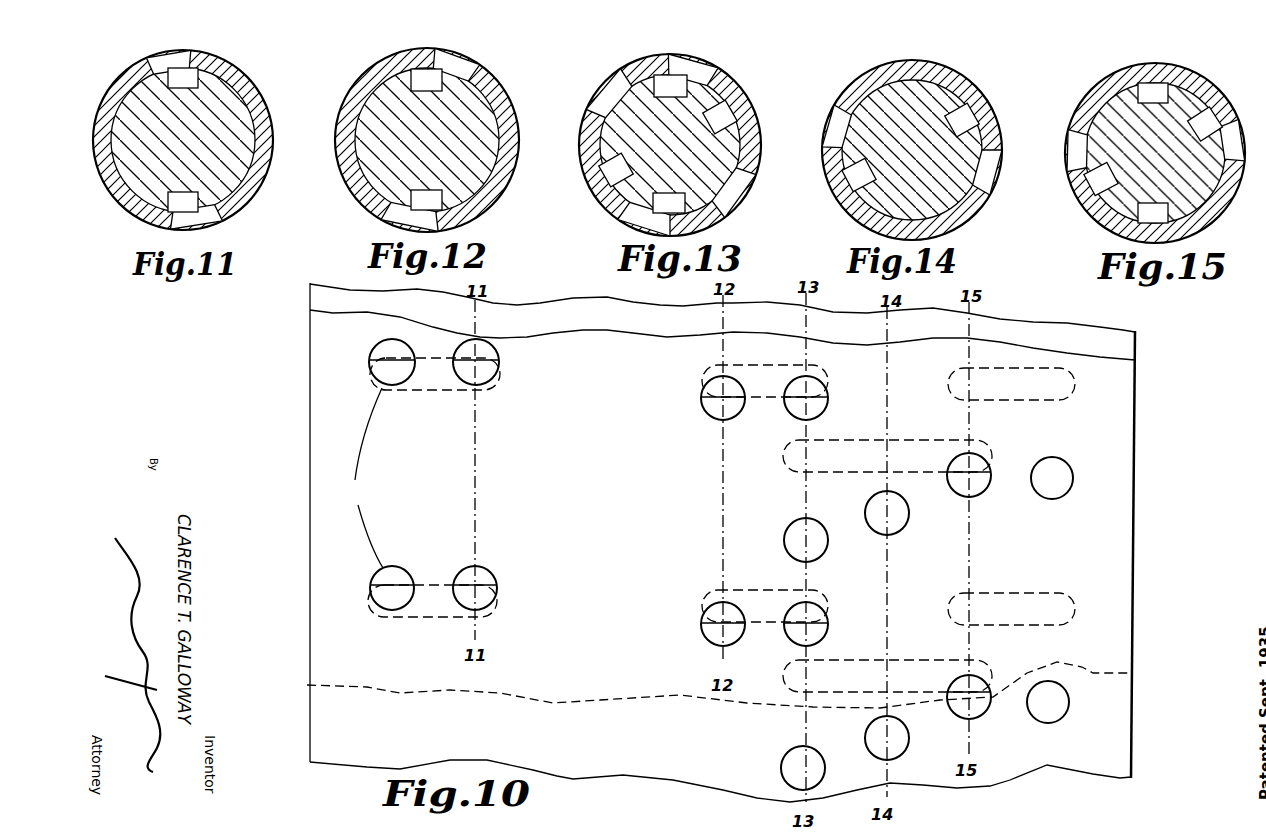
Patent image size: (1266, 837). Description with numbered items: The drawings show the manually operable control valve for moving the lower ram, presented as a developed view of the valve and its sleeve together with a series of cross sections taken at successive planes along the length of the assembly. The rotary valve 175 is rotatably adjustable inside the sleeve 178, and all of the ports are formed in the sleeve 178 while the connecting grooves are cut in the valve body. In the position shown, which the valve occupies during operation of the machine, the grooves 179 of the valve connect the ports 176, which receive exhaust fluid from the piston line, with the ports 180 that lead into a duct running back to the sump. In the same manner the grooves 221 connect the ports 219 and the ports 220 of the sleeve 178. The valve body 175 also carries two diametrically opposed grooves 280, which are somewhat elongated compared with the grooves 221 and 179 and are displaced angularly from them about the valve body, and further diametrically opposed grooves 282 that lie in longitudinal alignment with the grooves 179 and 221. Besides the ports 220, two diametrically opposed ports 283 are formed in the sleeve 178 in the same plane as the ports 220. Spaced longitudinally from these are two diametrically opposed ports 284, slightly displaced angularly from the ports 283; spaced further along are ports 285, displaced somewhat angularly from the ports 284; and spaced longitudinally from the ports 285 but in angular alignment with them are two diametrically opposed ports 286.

In FIG. 11, the rotary valve 175 is at (240, 115).
In FIG. 12, the rotary valve 175 is at (367, 120).
In FIG. 13, the rotary valve 175 is at (727, 157).
In FIG. 14, the rotary valve 175 is at (850, 156).
In FIG. 15, the rotary valve 175 is at (1110, 108).
In FIG. 10, the rotary valve 175 is at (1082, 668).
In FIG. 11, the ports 176 is at (158, 60).
In FIG. 10, the ports 176 is at (487, 390).
In FIG. 11, the sleeve 178 is at (247, 83).
In FIG. 12, the sleeve 178 is at (502, 105).
In FIG. 13, the sleeve 178 is at (743, 110).
In FIG. 14, the sleeve 178 is at (985, 110).
In FIG. 15, the sleeve 178 is at (1110, 75).
In FIG. 10, the sleeve 178 is at (1118, 712).
In FIG. 11, the grooves 179 is at (190, 73).
In FIG. 10, the grooves 179 is at (440, 393).
In FIG. 10, the ports 180 is at (363, 478).
In FIG. 12, the ports 219 is at (420, 77).
In FIG. 10, the ports 219 is at (706, 606).
In FIG. 13, the ports 220 is at (677, 78).
In FIG. 10, the ports 220 is at (790, 608).
In FIG. 12, the grooves 221 is at (433, 73).
In FIG. 13, the grooves 221 is at (690, 68).
In FIG. 10, the grooves 221 is at (757, 366).
In FIG. 13, the grooves 280 is at (722, 105).
In FIG. 14, the grooves 280 is at (967, 108).
In FIG. 15, the grooves 280 is at (1200, 107).
In FIG. 10, the grooves 280 is at (850, 441).
In FIG. 15, the grooves 282 is at (1160, 87).
In FIG. 10, the grooves 282 is at (1015, 369).
In FIG. 13, the ports 283 is at (607, 92).
In FIG. 10, the ports 283 is at (815, 522).
In FIG. 14, the ports 284 is at (832, 112).
In FIG. 10, the ports 284 is at (906, 512).
In FIG. 15, the ports 285 is at (1233, 127).
In FIG. 10, the ports 285 is at (992, 472).
In FIG. 10, the ports 286 is at (1072, 470).